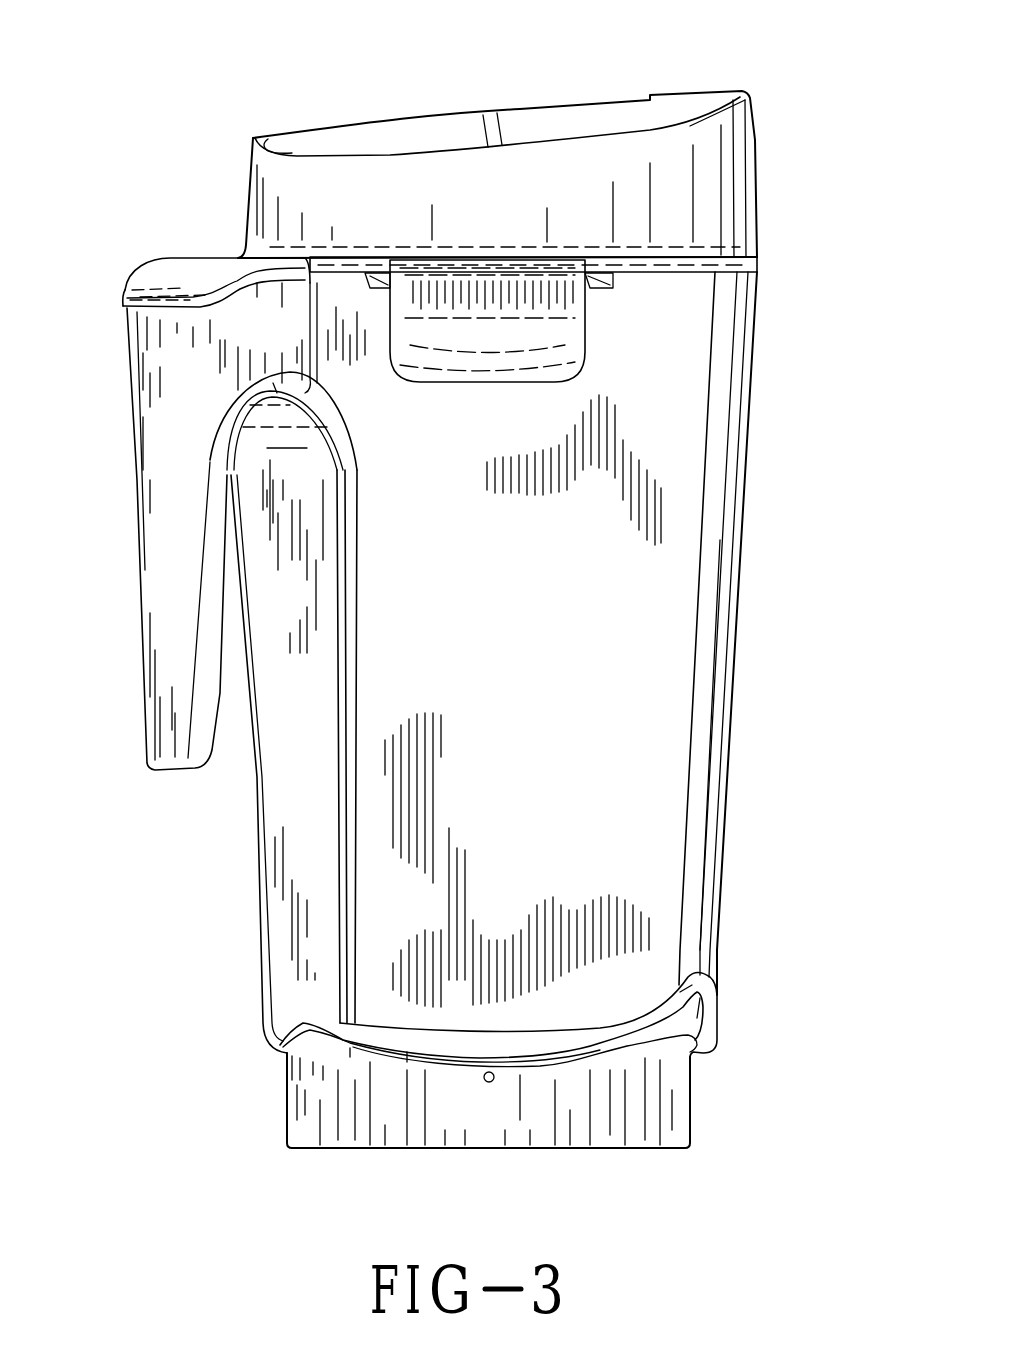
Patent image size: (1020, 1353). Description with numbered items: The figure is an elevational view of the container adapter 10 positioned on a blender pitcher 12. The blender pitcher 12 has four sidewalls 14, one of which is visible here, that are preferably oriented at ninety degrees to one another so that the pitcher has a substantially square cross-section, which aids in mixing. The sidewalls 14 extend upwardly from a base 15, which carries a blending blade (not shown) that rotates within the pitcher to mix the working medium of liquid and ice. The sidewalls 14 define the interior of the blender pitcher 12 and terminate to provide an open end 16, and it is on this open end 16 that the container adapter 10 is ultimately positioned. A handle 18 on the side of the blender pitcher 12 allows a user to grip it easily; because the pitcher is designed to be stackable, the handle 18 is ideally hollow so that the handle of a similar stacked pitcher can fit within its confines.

The container adapter 10 is at (241, 127).
The blender pitcher 12 is at (738, 790).
The sidewalls 14 is at (647, 615).
The base 15 is at (633, 1087).
The open end 16 is at (692, 286).
The handle 18 is at (173, 552).